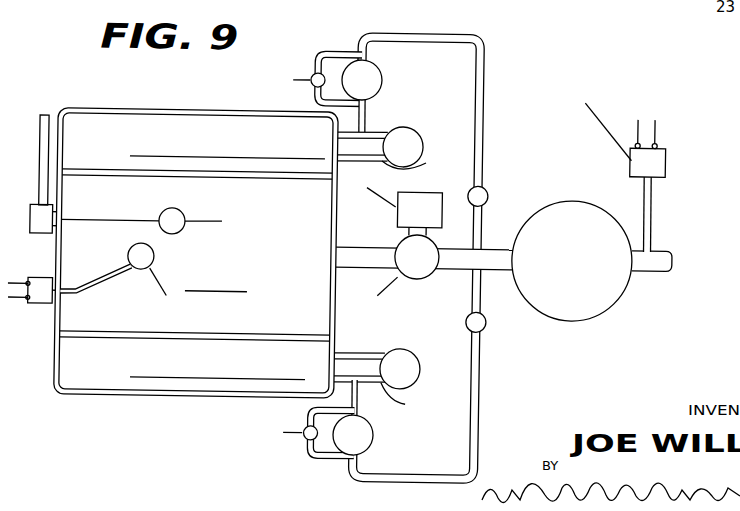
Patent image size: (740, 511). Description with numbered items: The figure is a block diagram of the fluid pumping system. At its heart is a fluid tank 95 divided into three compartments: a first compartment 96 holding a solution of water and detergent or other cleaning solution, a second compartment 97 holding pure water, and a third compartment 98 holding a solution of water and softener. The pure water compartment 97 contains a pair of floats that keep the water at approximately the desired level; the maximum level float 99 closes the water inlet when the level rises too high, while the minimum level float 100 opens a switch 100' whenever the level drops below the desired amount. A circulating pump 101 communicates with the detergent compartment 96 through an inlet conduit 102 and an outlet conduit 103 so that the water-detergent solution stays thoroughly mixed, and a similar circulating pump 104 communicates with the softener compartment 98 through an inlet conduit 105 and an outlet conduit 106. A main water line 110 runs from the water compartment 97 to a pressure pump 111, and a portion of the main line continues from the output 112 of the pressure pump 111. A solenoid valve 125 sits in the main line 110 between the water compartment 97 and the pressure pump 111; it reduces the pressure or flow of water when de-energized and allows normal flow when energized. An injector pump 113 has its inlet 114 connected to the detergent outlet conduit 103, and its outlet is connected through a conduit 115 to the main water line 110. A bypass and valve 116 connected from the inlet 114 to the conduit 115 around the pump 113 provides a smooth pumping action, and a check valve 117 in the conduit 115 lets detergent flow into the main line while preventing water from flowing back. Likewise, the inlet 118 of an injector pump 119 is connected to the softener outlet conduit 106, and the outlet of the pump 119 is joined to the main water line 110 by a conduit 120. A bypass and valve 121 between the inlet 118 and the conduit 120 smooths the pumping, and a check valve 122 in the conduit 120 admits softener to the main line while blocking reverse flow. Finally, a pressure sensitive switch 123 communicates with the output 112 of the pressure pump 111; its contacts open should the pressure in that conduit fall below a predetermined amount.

The fluid tank 95 is at (98, 108).
The first compartment 96 is at (104, 158).
The second compartment 97 is at (100, 268).
The third compartment 98 is at (106, 378).
The maximum level float 99 is at (180, 213).
The minimum level float 100 is at (156, 287).
The switch 100' is at (31, 309).
The circulating pump 101 is at (417, 133).
The inlet conduit 102 is at (398, 162).
The outlet conduit 103 is at (377, 128).
The circulating pump 104 is at (422, 358).
The inlet conduit 105 is at (372, 340).
The outlet conduit 106 is at (381, 398).
The main water line 110 is at (488, 252).
The pressure pump 111 is at (567, 206).
The output 112 is at (665, 249).
The injector pump 113 is at (380, 77).
The inlet 114 is at (366, 109).
The conduit 115 is at (455, 32).
The bypass and valve 116 is at (310, 72).
The check valve 117 is at (485, 192).
The inlet 118 is at (360, 390).
The injector pump 119 is at (378, 436).
The conduit 120 is at (485, 404).
The bypass and valve 121 is at (308, 440).
The check valve 122 is at (488, 324).
The pressure sensitive switch 123 is at (653, 158).
The solenoid valve 125 is at (406, 249).